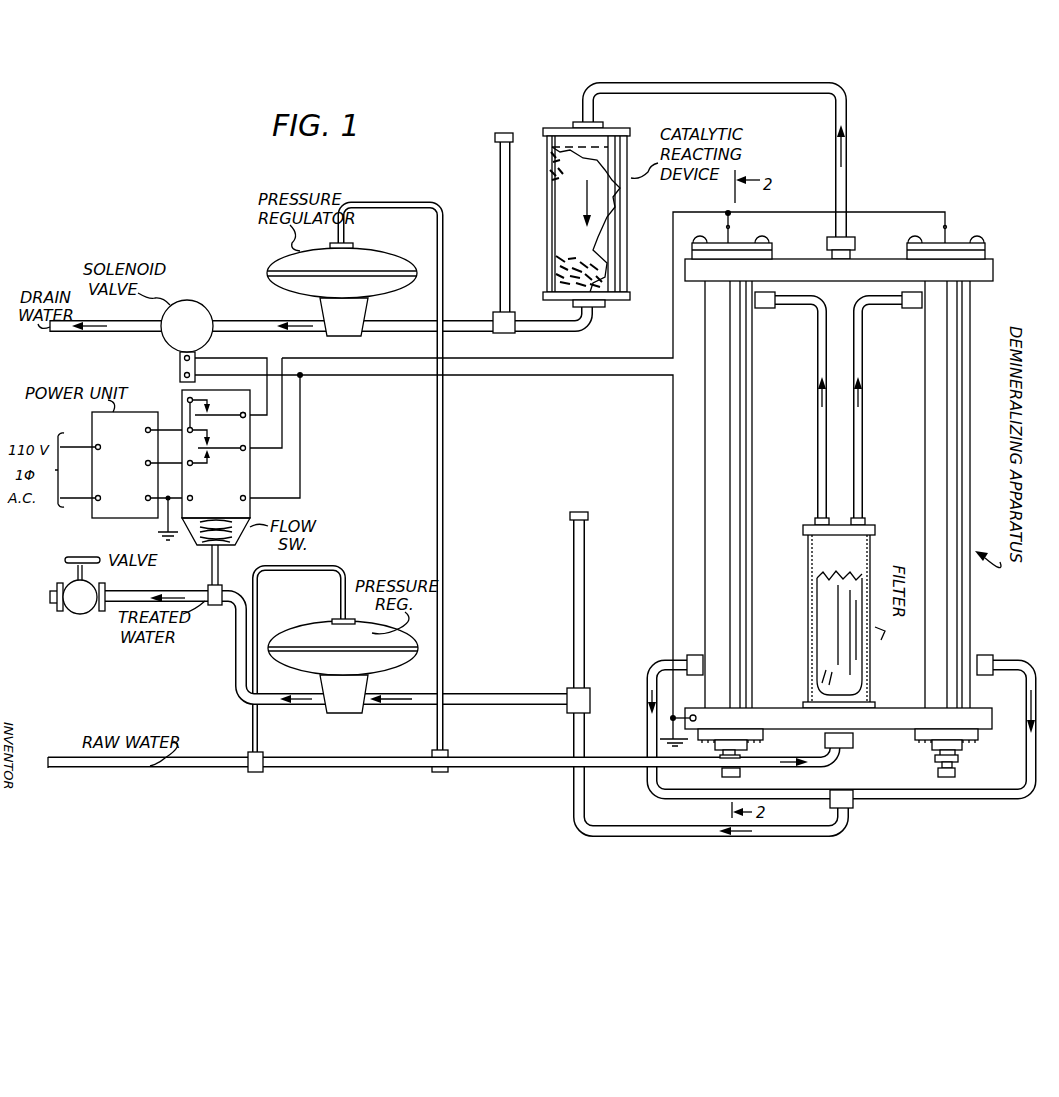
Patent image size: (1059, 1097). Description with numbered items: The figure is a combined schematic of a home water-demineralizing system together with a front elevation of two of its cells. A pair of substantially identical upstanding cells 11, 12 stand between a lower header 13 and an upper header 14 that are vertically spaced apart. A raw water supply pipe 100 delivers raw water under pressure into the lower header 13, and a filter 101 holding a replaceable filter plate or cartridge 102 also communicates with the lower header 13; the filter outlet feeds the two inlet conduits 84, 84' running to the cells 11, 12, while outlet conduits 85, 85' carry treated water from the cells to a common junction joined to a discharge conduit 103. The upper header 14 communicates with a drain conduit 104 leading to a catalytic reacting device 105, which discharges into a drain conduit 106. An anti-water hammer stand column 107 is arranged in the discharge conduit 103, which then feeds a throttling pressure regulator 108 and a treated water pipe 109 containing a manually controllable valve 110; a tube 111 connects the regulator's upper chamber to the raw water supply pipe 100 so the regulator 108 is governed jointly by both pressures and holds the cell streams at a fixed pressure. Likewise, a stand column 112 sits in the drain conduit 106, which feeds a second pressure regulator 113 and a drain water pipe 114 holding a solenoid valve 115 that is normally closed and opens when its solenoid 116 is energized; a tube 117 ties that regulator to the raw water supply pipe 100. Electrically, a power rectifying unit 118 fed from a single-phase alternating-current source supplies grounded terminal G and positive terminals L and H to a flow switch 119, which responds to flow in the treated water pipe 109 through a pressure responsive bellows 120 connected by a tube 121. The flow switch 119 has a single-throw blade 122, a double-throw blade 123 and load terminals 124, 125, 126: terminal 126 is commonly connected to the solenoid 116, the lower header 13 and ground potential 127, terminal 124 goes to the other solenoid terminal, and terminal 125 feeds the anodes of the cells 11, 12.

The left-hand cell 11 is at (752, 405).
The right-hand cell 12 is at (926, 400).
The lower header 13 is at (885, 720).
The upper header 14 is at (866, 266).
The inlet conduit 84 is at (792, 408).
The inlet conduit 84' is at (886, 408).
The outlet conduit 85 is at (738, 713).
The outlet conduit 85' is at (938, 706).
The raw water supply pipe 100 is at (240, 766).
The filter 101 is at (808, 585).
The filter plate or cartridge 102 is at (835, 634).
The discharge conduit 103 is at (566, 822).
The drain conduit 104 is at (850, 177).
The catalytic reacting device 105 is at (628, 242).
The drain conduit 106 is at (580, 328).
The anti-water hammer stand column 107 is at (584, 586).
The pressure regulator 108 is at (305, 631).
The treated water pipe 109 is at (140, 591).
The manually controllable valve 110 is at (80, 614).
The tube 111 is at (333, 563).
The anti-water hammer stand column 112 is at (500, 190).
The pressure regulator 113 is at (368, 256).
The drain water pipe 114 is at (236, 325).
The solenoid valve 115 is at (187, 326).
The solenoid 116 is at (180, 375).
The tube 117 is at (444, 456).
The power rectifying unit 118 is at (92, 426).
The flow switch 119 is at (232, 478).
The pressure responsive bellows 120 is at (232, 553).
The tube 121 is at (211, 578).
The single-throw blade 122 is at (212, 414).
The double-throw blade 123 is at (210, 448).
The load terminal 124 is at (246, 417).
The load terminal 125 is at (246, 450).
The load terminal 126 is at (300, 494).
The ground potential 127 is at (673, 729).